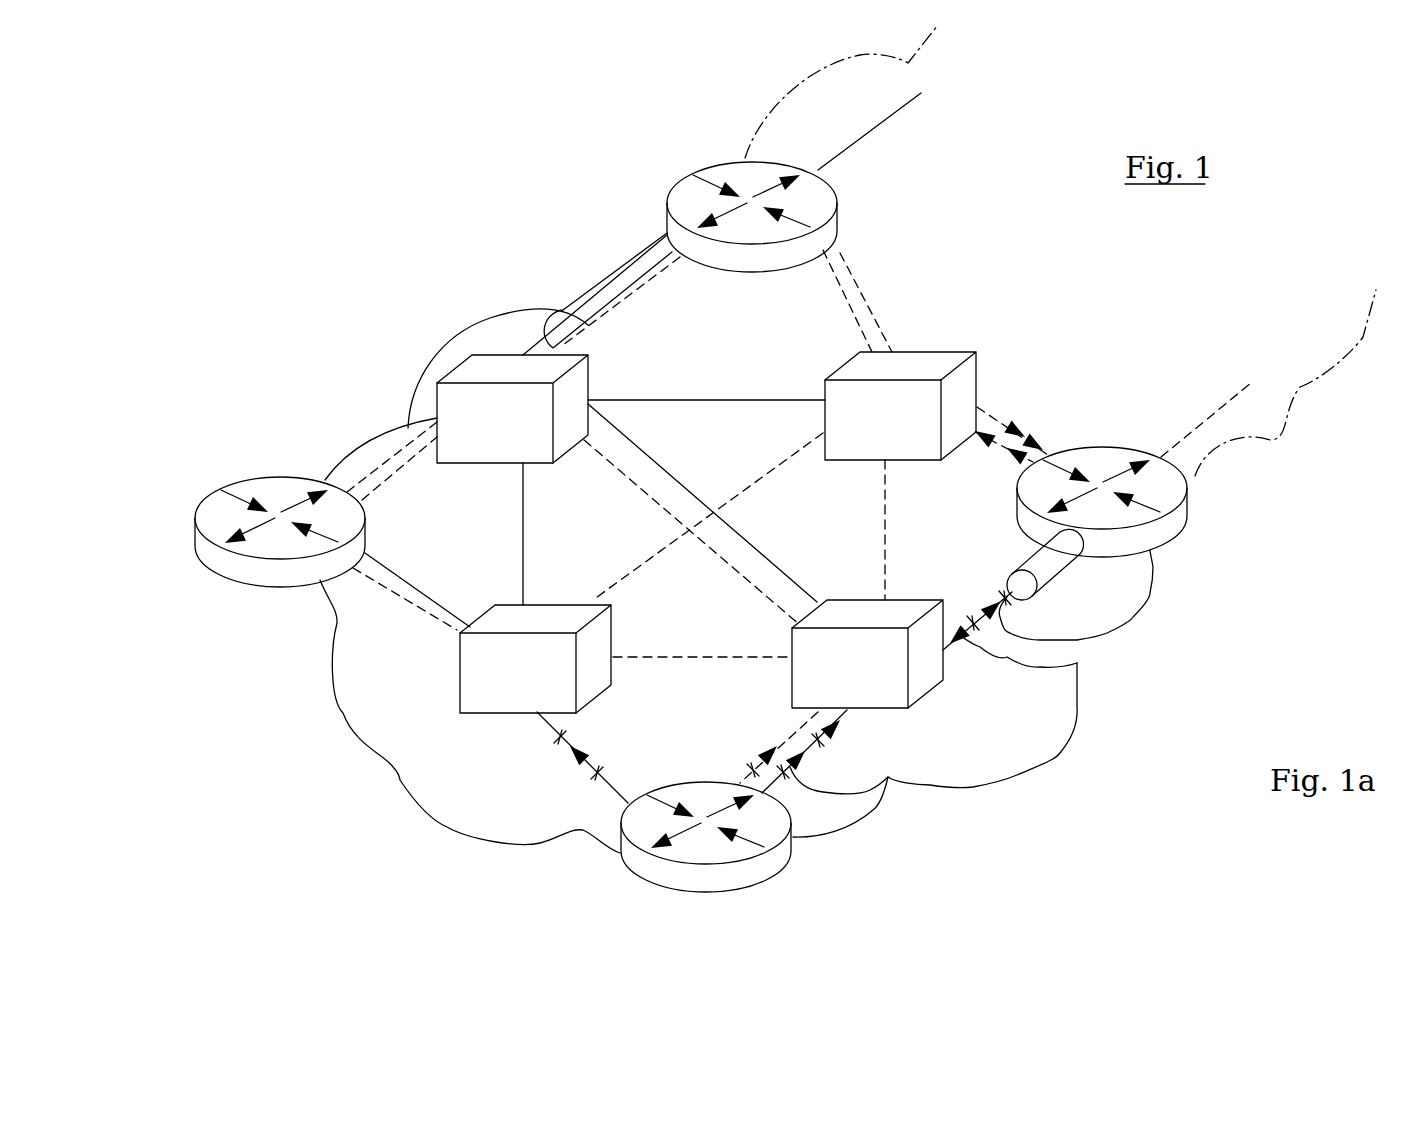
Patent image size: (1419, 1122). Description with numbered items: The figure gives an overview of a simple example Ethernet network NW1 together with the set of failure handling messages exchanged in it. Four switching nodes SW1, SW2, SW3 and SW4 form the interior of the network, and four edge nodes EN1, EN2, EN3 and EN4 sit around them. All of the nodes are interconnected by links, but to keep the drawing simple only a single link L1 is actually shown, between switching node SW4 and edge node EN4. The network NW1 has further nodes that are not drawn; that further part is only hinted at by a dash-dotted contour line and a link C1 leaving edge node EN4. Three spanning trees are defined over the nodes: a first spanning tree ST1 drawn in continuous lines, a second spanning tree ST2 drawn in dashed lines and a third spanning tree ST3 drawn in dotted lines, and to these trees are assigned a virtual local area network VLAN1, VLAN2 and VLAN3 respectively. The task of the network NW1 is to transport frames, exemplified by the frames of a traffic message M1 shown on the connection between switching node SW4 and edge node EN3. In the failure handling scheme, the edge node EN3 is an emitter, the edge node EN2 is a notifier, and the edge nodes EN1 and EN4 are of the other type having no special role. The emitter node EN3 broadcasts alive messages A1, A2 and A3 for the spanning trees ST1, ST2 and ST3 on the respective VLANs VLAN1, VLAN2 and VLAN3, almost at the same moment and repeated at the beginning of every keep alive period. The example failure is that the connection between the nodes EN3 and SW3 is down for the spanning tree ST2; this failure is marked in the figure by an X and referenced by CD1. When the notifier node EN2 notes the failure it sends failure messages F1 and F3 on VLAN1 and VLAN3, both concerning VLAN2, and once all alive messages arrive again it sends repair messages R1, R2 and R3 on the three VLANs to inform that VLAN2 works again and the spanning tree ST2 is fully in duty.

The edge node EN1 is at (738, 160).
The edge node EN2 is at (234, 586).
The edge node EN3 is at (655, 888).
The edge node EN4 is at (1188, 518).
The switching node SW1 is at (900, 406).
The switching node SW2 is at (512, 409).
The switching node SW3 is at (535, 659).
The switching node SW4 is at (867, 654).
The virtual local area network VLAN1 is at (599, 242).
The virtual local area network VLAN2 is at (351, 420).
The virtual local area network VLAN3 is at (498, 322).
The first spanning tree ST1 is at (617, 273).
The second spanning tree ST2 is at (366, 466).
The third spanning tree ST3 is at (552, 348).
The failure CD1 is at (563, 745).
The Ethernet network NW1 is at (1072, 774).
The link L1 is at (1070, 553).
The failure message F1 is at (1080, 663).
The failure message F3 is at (1007, 428).
The repair message R1 is at (1077, 666).
The repair message R2 is at (1037, 428).
The repair message R3 is at (1033, 444).
The alive message A1 is at (822, 737).
The alive message A2 is at (597, 773).
The alive message A3 is at (787, 770).
The traffic message M1 is at (890, 778).
The link C1 is at (1200, 434).